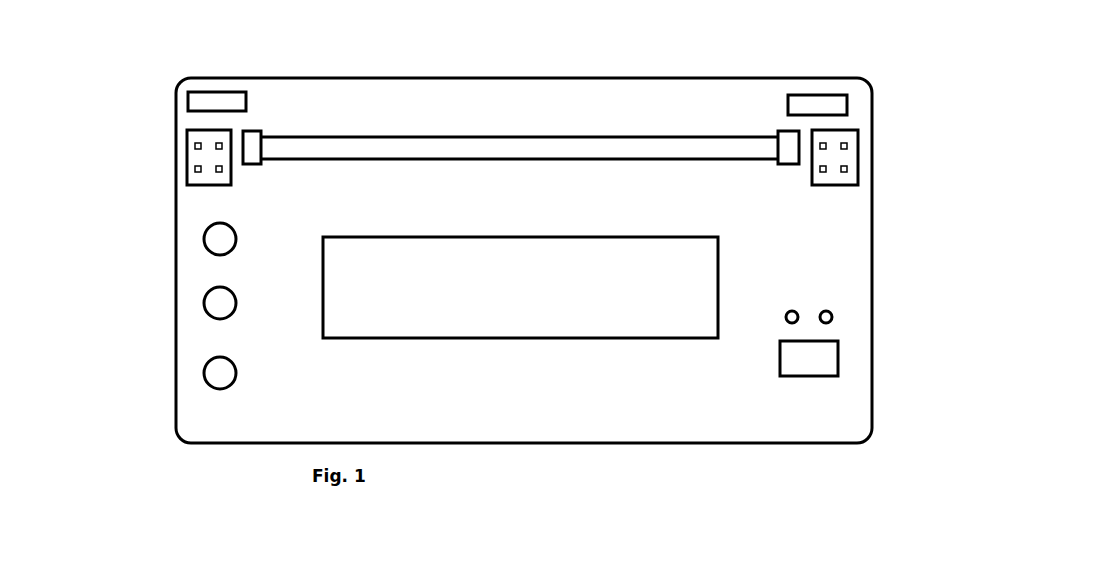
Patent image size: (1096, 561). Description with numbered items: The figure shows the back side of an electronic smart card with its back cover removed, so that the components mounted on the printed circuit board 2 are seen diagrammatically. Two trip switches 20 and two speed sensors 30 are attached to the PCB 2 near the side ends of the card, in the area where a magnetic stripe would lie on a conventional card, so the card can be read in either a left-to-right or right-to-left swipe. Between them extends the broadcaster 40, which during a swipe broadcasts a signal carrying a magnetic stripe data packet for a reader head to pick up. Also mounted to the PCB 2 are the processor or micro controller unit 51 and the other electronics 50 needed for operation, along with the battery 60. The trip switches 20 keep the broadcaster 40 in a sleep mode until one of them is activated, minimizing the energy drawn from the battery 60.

The printed circuit board 2 is at (577, 398).
The trip switches 20 is at (188, 178).
The speed sensors 30 is at (197, 102).
The broadcaster 40 is at (489, 146).
The electronics 50 is at (832, 295).
The processor or micro controller unit 51 is at (823, 365).
The battery 60 is at (492, 323).